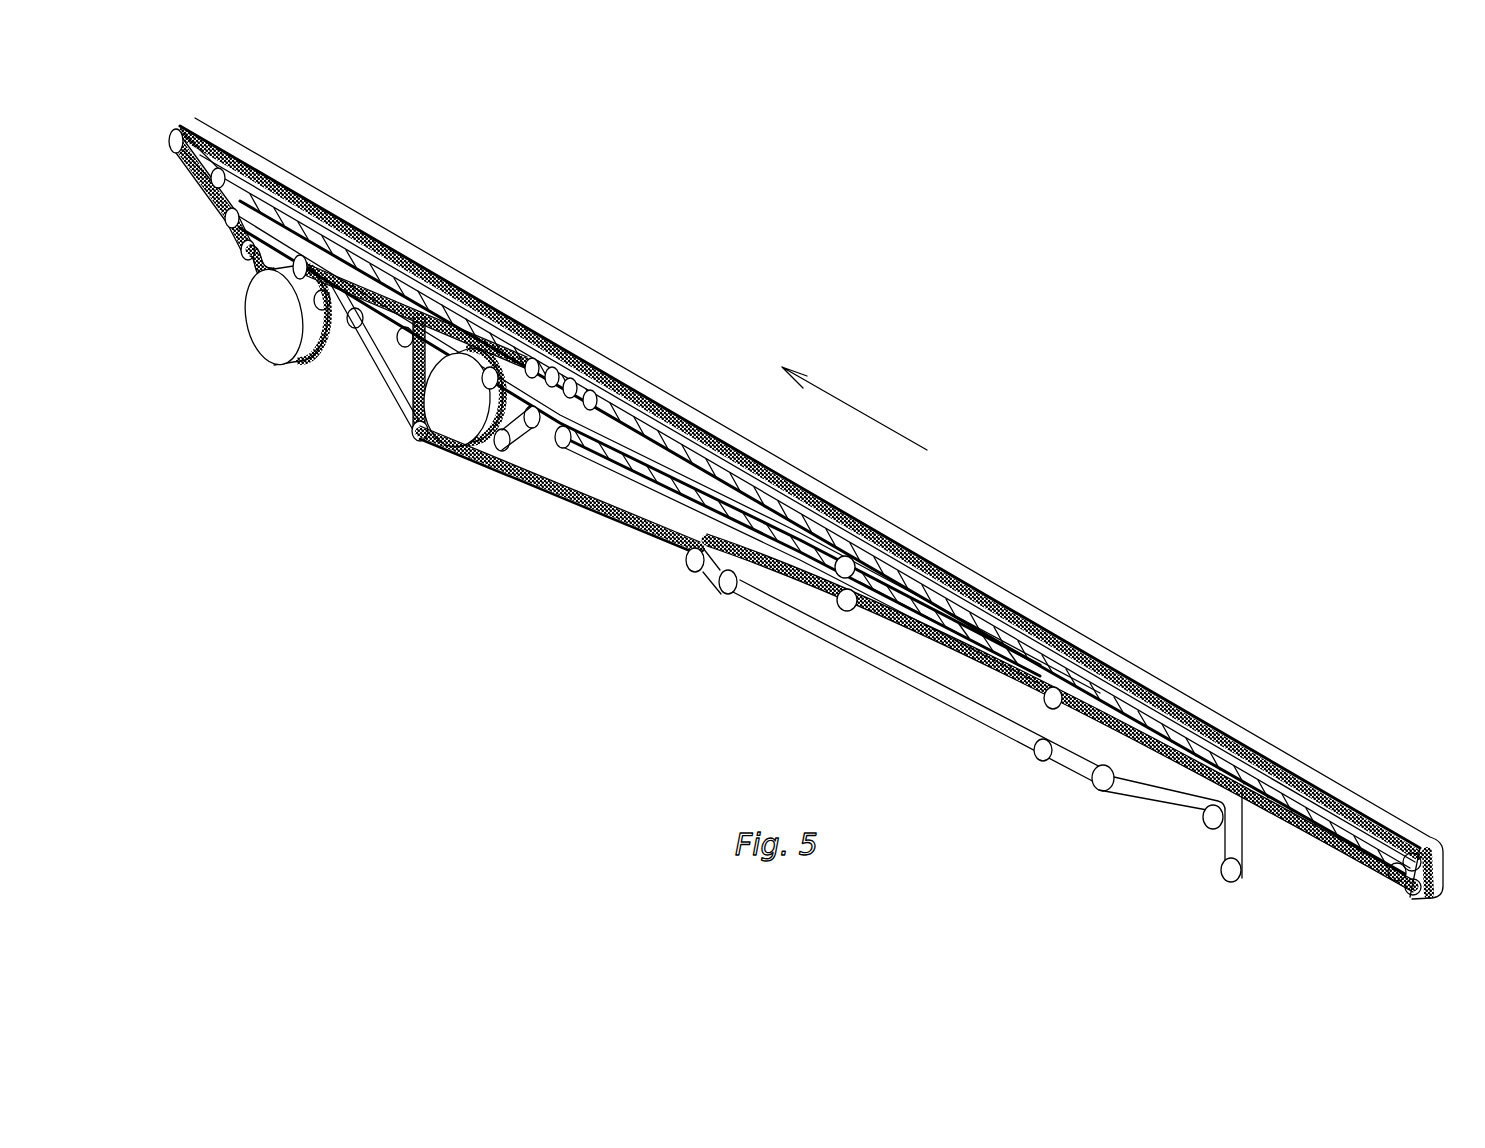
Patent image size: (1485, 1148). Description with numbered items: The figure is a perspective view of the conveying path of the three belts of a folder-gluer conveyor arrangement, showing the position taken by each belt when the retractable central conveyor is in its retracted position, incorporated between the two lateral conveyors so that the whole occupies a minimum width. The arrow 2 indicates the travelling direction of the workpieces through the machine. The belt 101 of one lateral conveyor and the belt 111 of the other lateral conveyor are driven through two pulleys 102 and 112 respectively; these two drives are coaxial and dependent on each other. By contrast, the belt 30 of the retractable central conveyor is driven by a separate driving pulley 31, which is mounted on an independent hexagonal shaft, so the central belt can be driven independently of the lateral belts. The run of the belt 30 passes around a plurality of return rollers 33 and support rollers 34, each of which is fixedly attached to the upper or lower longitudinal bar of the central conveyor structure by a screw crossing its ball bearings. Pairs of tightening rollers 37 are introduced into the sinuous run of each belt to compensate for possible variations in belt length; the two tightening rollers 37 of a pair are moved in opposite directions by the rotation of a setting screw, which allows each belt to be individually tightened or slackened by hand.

The arrow 2 is at (862, 413).
The belt 30 is at (890, 598).
The driving pulley 31 is at (460, 432).
The return roller 33 is at (852, 560).
The support rollers 34 is at (576, 385).
The tightening rollers 37 is at (560, 448).
The belt 101 is at (938, 648).
The pulley 102 is at (279, 340).
The belt 111 is at (980, 700).
The pulley 112 is at (243, 283).